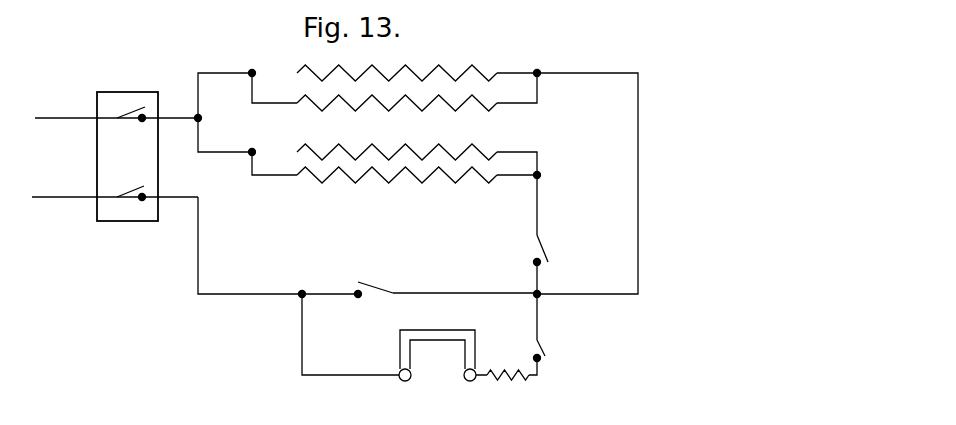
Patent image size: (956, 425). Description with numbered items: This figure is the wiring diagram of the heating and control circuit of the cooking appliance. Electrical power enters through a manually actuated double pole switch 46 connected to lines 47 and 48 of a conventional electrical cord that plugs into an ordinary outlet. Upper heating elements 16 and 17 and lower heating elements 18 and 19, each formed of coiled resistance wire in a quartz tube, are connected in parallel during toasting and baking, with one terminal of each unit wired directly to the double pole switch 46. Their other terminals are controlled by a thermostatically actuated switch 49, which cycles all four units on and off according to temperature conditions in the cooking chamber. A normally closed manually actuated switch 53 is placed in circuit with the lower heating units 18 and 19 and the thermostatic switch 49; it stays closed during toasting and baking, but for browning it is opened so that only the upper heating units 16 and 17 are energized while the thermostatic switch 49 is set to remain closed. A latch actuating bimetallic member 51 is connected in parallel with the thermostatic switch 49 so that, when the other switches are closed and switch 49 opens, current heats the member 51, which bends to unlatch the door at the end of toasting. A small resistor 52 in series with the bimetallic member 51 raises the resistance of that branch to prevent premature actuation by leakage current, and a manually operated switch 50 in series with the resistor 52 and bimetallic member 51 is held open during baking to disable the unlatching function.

The electric heating element 16 is at (477, 71).
The electric heating element 17 is at (463, 102).
The electric heating element 18 is at (447, 145).
The electric heating element 19 is at (462, 178).
The double pole switch 46 is at (123, 91).
The line 47 is at (45, 117).
The line 48 is at (41, 197).
The thermostatically actuated switch 49 is at (373, 283).
The manually operated switch 50 is at (546, 343).
The latch actuating bimetallic member 51 is at (433, 341).
The resistor 52 is at (496, 372).
The normally closed manually actuated switch 53 is at (546, 243).